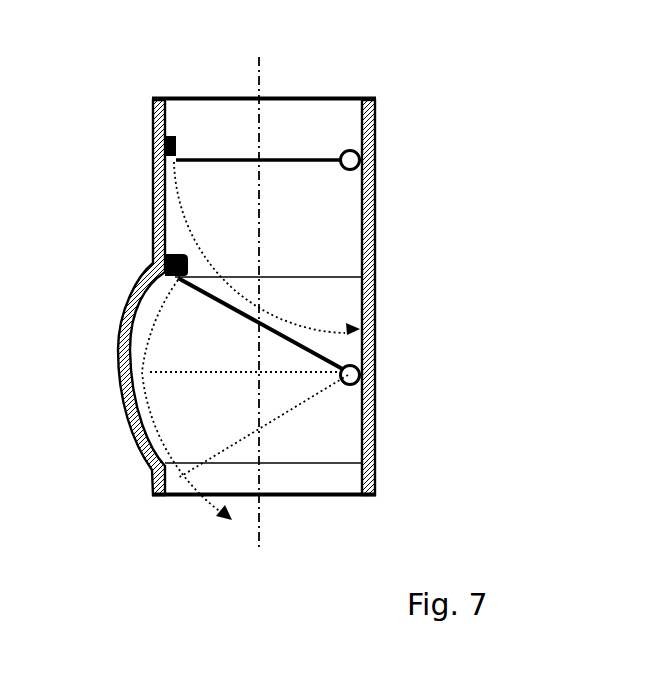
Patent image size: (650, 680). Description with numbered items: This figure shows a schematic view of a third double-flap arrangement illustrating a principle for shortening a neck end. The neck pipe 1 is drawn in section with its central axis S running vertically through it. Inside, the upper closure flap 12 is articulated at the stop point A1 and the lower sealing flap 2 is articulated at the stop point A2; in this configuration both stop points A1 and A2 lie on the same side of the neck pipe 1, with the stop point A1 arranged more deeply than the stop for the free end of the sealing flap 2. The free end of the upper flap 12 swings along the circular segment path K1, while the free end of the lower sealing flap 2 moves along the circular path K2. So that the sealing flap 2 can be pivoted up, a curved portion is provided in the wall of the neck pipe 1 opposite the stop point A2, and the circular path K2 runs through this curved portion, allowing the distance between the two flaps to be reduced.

The neck pipe 1 is at (365, 422).
The upper closure flap 12 is at (365, 232).
The lower sealing flap 2 is at (218, 305).
The stop point A1 is at (365, 166).
The stop point A2 is at (365, 380).
The central axis S is at (262, 60).
The circular segment path K1 is at (165, 195).
The circular path K2 is at (194, 485).